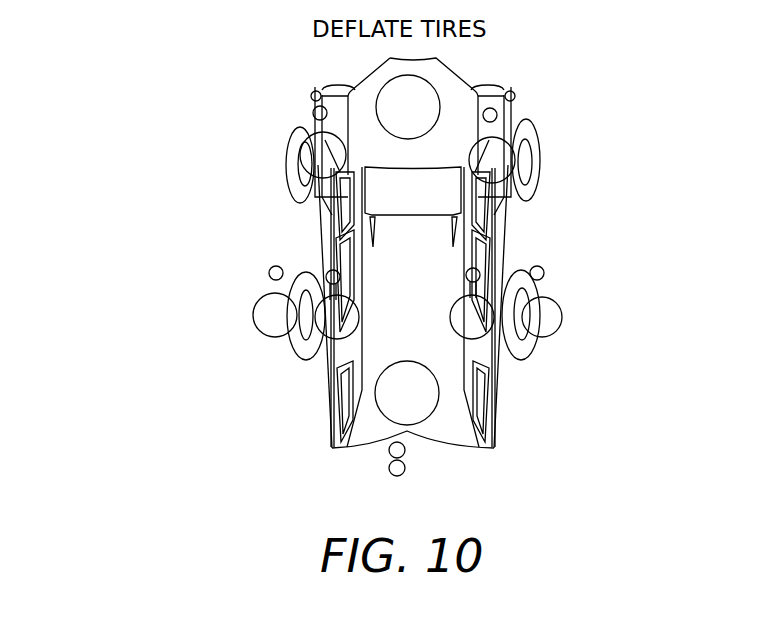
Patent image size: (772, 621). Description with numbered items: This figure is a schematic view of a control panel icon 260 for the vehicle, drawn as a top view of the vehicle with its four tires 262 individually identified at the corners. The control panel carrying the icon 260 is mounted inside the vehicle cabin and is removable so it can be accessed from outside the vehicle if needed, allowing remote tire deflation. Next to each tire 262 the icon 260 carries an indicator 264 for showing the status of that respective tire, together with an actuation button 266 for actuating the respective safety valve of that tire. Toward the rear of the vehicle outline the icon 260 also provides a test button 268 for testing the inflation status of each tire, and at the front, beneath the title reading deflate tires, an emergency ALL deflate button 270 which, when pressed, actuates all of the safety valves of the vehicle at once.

The control panel icon 260 is at (225, 90).
The tires 262 is at (538, 195).
The indicator 264 is at (328, 272).
The actuation button 266 is at (477, 330).
The test button 268 is at (400, 408).
The emergency ALL deflate button 270 is at (435, 103).